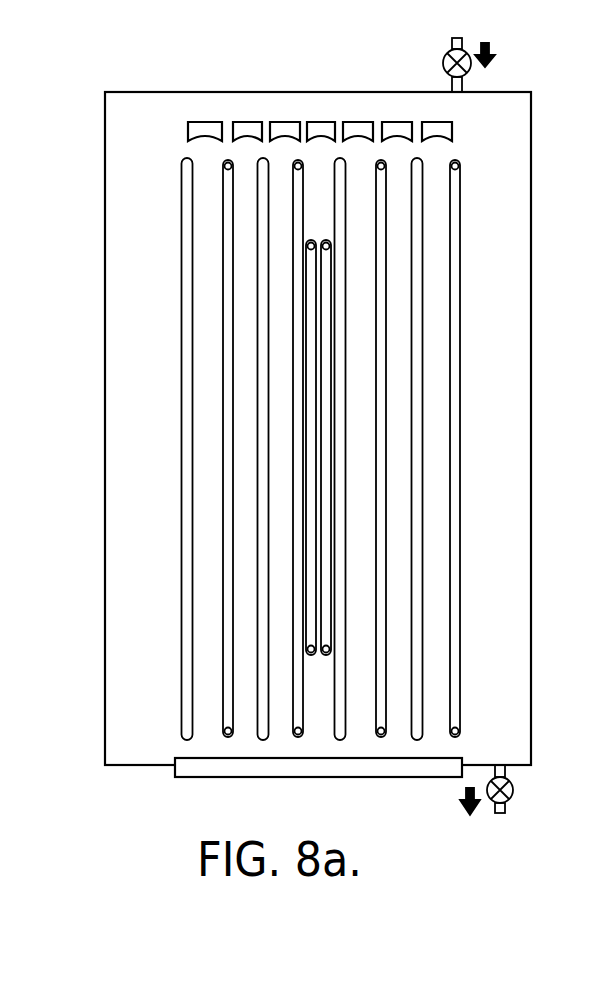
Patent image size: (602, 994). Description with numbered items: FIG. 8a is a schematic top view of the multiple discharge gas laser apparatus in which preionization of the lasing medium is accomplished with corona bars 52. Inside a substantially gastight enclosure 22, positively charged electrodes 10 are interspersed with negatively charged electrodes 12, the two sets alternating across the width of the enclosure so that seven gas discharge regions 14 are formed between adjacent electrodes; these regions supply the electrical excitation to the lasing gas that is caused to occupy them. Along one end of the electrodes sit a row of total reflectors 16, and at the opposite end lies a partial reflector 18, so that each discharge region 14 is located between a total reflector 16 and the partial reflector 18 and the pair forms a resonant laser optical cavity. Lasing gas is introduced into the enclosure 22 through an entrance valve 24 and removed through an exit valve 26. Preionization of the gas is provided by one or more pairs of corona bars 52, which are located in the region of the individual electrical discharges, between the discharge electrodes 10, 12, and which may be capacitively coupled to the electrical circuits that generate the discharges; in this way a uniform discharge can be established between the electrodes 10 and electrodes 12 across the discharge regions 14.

The positively charged electrodes 10 is at (290, 673).
The negatively charged electrodes 12 is at (262, 552).
The gas discharge regions 14 is at (308, 230).
The total reflectors 16 is at (322, 122).
The partial reflector 18 is at (180, 778).
The enclosure 22 is at (532, 232).
The entrance valve 24 is at (440, 53).
The exit valve 26 is at (514, 790).
The corona bars 52 is at (310, 351).